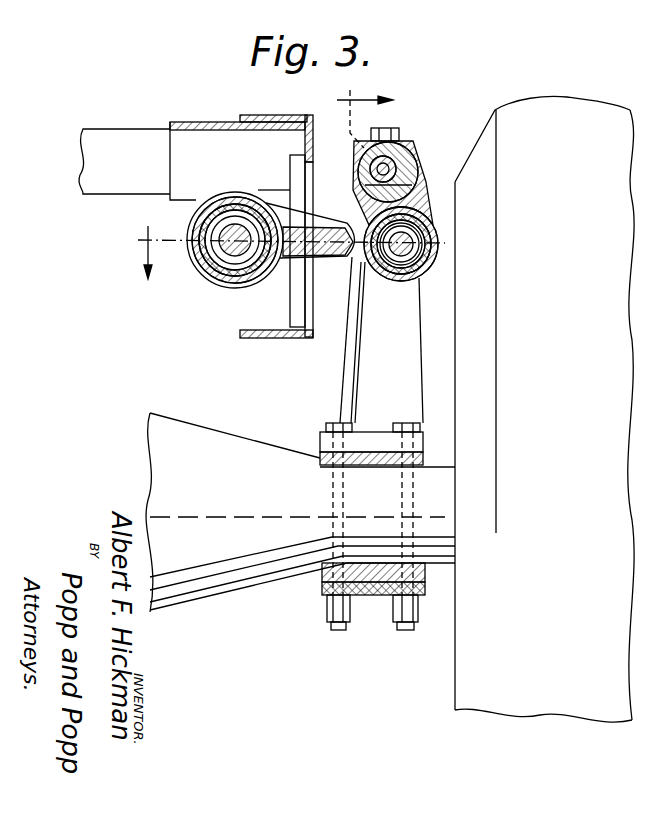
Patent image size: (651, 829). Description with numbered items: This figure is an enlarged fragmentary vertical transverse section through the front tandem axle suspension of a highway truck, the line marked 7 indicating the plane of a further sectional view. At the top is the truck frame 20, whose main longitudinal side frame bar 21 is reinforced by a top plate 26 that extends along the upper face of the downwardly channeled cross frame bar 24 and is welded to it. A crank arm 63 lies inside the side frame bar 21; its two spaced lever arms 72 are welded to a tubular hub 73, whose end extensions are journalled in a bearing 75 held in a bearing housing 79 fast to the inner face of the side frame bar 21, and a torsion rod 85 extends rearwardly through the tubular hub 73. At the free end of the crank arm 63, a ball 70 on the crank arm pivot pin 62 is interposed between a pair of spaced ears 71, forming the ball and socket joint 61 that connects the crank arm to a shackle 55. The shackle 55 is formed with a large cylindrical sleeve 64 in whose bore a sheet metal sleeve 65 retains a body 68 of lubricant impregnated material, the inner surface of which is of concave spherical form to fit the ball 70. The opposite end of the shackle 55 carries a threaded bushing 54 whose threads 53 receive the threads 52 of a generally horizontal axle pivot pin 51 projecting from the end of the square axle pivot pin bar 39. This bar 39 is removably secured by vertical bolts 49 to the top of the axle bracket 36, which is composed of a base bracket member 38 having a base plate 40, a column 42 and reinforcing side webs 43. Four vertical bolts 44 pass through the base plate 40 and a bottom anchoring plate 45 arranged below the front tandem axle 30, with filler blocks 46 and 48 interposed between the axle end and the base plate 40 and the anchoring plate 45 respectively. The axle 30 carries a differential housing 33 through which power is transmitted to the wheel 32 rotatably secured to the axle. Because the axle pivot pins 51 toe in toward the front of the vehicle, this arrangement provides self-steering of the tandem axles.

The section line 7- 7 is at (276, 181).
The frame 20 is at (88, 124).
The cross frame bar 24 is at (80, 158).
The top plate 26 is at (179, 120).
The main longitudinal side frame bar 21 is at (266, 339).
The bearing 75 is at (278, 187).
The bearing housing 79 is at (258, 190).
The tubular hub 73 is at (224, 266).
The crank arm 63 is at (205, 266).
The torsion rod 85 is at (232, 236).
The lever arm 72 is at (337, 230).
The ear 71 is at (347, 257).
The side web 43 is at (345, 373).
The axle bracket 36 is at (340, 403).
The base bracket member 38 is at (387, 342).
The column 42 is at (400, 350).
The body of lubricant impregnated material 68 is at (421, 272).
The cylindrical sleeve 64 is at (428, 236).
The sheet metal sleeve 65 is at (428, 256).
The ball 70 is at (430, 222).
The crank arm pivot pin 62 is at (404, 245).
The ball and socket joint 61 is at (401, 283).
The shackle 55 is at (436, 190).
The axle pivot pin bar 39 is at (405, 146).
The threads 52 is at (393, 145).
The threads 53 is at (394, 163).
The threaded bushing 54 is at (423, 155).
The axle pivot pin 51 is at (398, 172).
The vertical bolt 49 is at (383, 128).
The base plate 40 is at (321, 441).
The filler block 46 is at (383, 464).
The vertical bolt 44 is at (343, 630).
The differential housing 33 is at (150, 437).
The front tandem axle 30 is at (440, 501).
The filler block 48 is at (325, 575).
The bottom anchoring plate 45 is at (380, 592).
The wheel 32 is at (544, 409).